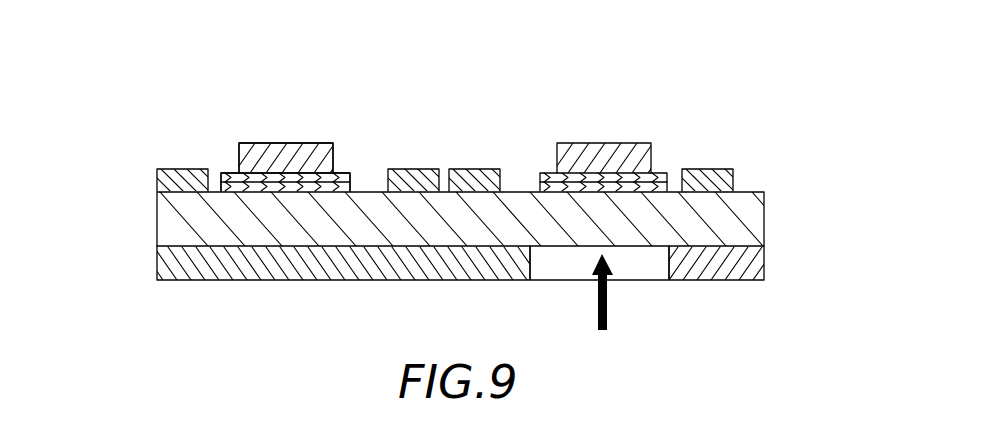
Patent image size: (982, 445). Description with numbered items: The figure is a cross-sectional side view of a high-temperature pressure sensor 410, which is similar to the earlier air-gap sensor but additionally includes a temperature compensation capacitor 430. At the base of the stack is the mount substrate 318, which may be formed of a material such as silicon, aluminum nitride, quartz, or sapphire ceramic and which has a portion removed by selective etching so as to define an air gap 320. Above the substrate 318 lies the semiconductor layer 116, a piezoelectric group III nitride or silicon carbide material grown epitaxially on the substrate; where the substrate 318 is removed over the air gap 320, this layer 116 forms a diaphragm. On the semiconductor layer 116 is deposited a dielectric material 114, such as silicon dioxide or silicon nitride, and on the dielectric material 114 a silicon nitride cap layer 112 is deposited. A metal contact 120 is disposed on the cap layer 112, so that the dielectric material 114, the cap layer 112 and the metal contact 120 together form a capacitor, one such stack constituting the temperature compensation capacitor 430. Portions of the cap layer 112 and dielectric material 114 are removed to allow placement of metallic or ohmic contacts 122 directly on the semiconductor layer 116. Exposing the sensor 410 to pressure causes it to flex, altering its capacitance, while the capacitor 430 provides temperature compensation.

The high-temperature pressure sensor 410 is at (613, 85).
The temperature compensation capacitor 430 is at (443, 130).
The semiconductor layer 116 is at (167, 222).
The mount substrate 318 is at (163, 265).
The air gap 320 is at (660, 273).
The metallic or ohmic contact 122 is at (167, 185).
The metal contact 120 is at (277, 156).
The silicon nitride cap layer 112 is at (341, 177).
The dielectric material 114 is at (352, 190).